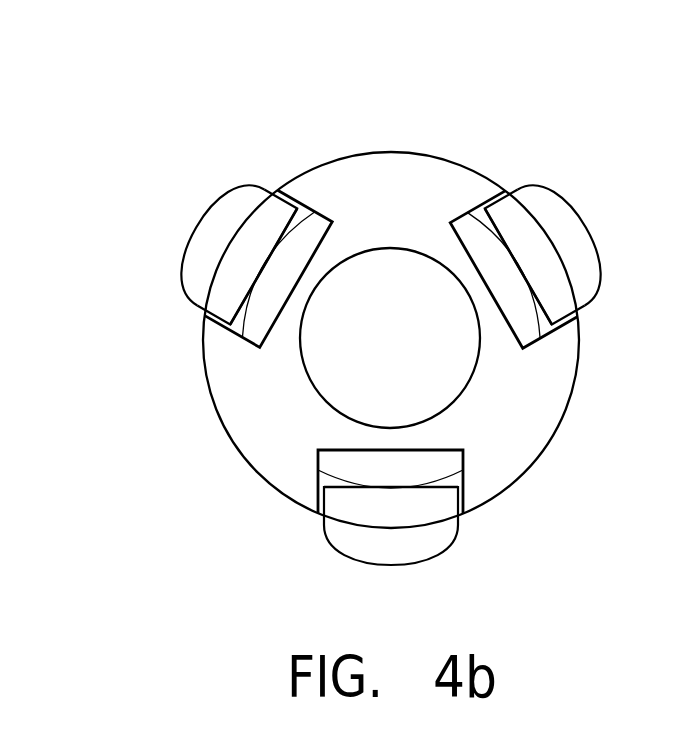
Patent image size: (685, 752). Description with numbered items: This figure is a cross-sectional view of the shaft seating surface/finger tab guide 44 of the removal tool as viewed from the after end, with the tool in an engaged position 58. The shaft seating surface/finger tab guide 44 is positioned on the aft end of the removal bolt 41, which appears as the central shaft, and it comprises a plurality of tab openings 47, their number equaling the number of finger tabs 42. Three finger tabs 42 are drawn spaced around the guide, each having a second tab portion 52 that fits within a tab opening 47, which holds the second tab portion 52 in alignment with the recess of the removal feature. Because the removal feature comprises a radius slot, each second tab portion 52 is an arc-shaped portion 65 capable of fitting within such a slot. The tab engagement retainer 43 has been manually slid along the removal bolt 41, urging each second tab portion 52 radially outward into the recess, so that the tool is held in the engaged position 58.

The engaged position 58 is at (193, 90).
The removal bolt 41 is at (412, 358).
The finger tab 42 is at (248, 268).
The tab engagement retainer 43 is at (278, 293).
The shaft seating surface/finger tab guide 44 is at (280, 405).
The tab opening 47 is at (283, 228).
The second tab portion 52 is at (200, 277).
The arc-shaped portion 65 is at (195, 222).